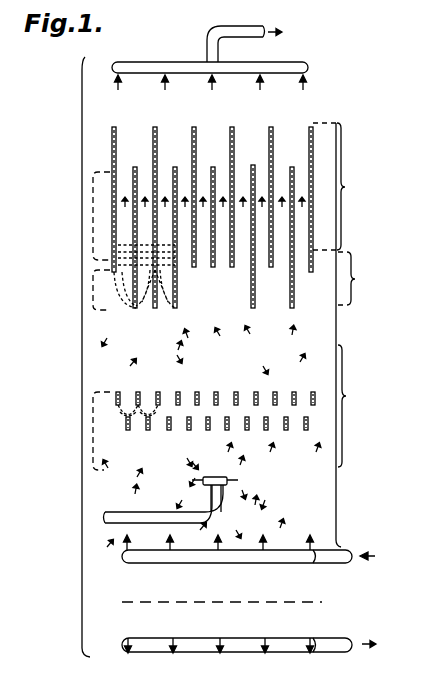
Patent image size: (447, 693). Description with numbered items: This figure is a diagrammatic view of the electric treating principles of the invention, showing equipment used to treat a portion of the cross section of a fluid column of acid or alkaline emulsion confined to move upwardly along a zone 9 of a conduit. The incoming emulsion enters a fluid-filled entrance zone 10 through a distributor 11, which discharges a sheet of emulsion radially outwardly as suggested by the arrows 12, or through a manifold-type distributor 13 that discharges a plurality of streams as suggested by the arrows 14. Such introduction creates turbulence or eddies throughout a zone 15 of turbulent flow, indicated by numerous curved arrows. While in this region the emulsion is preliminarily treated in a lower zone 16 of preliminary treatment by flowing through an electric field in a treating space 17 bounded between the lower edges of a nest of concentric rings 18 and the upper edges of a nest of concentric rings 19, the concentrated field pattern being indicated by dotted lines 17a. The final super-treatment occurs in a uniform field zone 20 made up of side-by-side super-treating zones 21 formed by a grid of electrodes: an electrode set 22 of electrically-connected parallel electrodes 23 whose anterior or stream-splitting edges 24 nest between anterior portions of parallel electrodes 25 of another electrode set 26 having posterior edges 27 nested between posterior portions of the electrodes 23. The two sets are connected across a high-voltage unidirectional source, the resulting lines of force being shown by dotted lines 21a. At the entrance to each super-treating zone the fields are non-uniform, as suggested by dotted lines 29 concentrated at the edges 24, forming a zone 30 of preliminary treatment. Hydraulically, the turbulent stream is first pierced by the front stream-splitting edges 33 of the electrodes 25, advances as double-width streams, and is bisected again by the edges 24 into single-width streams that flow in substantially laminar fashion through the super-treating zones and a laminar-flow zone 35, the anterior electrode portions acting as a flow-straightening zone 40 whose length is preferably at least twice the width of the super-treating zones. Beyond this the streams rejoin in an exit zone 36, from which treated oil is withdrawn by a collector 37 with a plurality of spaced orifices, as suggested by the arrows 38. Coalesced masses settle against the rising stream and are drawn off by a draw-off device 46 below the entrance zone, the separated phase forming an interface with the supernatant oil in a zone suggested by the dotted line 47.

The zone of a conduit 9 is at (79, 354).
The entrance zone 10 is at (285, 506).
The distributor 11 is at (216, 477).
The arrows 12 is at (184, 476).
The manifold-type distributor 13 is at (193, 563).
The arrows 14 is at (170, 540).
The zone of turbulent flow 15 is at (365, 406).
The lower zone of preliminary treatment 16 is at (93, 430).
The treating space 17 is at (317, 413).
The dotted lines 17a is at (138, 430).
The nest of concentric rings 18 is at (314, 392).
The nest of concentric rings 19 is at (305, 424).
The uniform field zone 20 is at (93, 215).
The super-treating zones 21 is at (131, 229).
The dotted lines 21a is at (124, 250).
The electrode set 22 is at (260, 125).
The parallel electrodes 23 is at (311, 127).
The anterior or stream-splitting edges 24 is at (312, 272).
The parallel electrodes 25 is at (266, 307).
The electrode set 26 is at (311, 304).
The posterior edges 27 is at (253, 165).
The dotted lines 29 is at (163, 300).
The zone of preliminary treatment 30 is at (93, 289).
The front or anterior stream-splitting edges 33 is at (296, 293).
The laminar-flow zone 35 is at (346, 186).
The exit zone 36 is at (315, 104).
The collector 37 is at (280, 62).
The arrows 38 is at (120, 80).
The flow-straightening zone 40 is at (379, 278).
The draw-off device 46 is at (292, 650).
The dotted line 47 is at (313, 599).